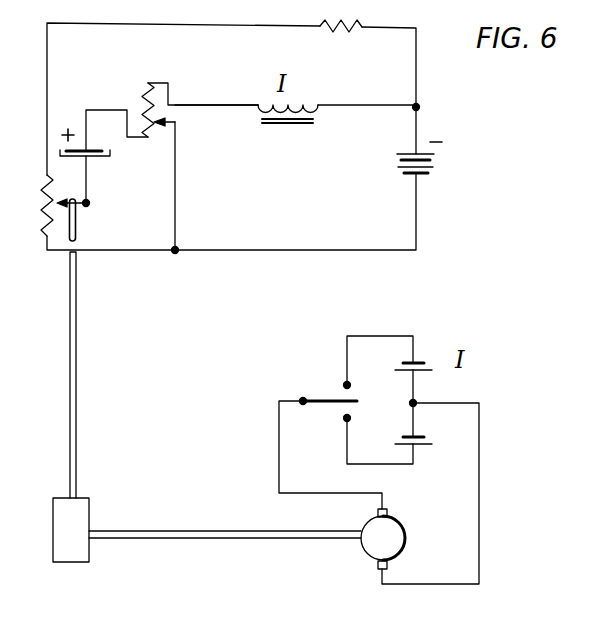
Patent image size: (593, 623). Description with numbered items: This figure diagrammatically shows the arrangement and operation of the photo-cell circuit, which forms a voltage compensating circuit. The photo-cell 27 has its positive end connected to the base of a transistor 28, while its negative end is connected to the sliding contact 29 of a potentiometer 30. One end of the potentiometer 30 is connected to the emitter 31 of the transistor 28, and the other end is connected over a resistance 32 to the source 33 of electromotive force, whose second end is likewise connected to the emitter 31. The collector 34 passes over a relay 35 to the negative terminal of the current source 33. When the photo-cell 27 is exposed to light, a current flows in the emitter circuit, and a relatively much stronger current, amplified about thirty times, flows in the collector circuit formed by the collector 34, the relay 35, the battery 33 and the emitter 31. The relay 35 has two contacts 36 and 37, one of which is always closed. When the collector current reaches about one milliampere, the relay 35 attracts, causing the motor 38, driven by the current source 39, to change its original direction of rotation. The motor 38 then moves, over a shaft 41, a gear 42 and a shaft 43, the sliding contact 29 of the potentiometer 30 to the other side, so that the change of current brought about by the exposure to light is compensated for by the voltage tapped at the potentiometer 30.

The photo-cell 27 is at (104, 157).
The transistor 28 is at (147, 90).
The sliding contact 29 is at (60, 201).
The potentiometer 30 is at (47, 205).
The emitter 31 is at (177, 142).
The resistance 32 is at (355, 33).
The source of electromotive force 33 is at (428, 163).
The collector 34 is at (216, 104).
The relay 35 is at (300, 119).
The relay contact 36 is at (345, 385).
The relay contact 37 is at (345, 418).
The motor 38 is at (400, 536).
The current source 39 is at (426, 364).
The shaft 41 is at (245, 540).
The gear 42 is at (62, 538).
The shaft 43 is at (70, 404).